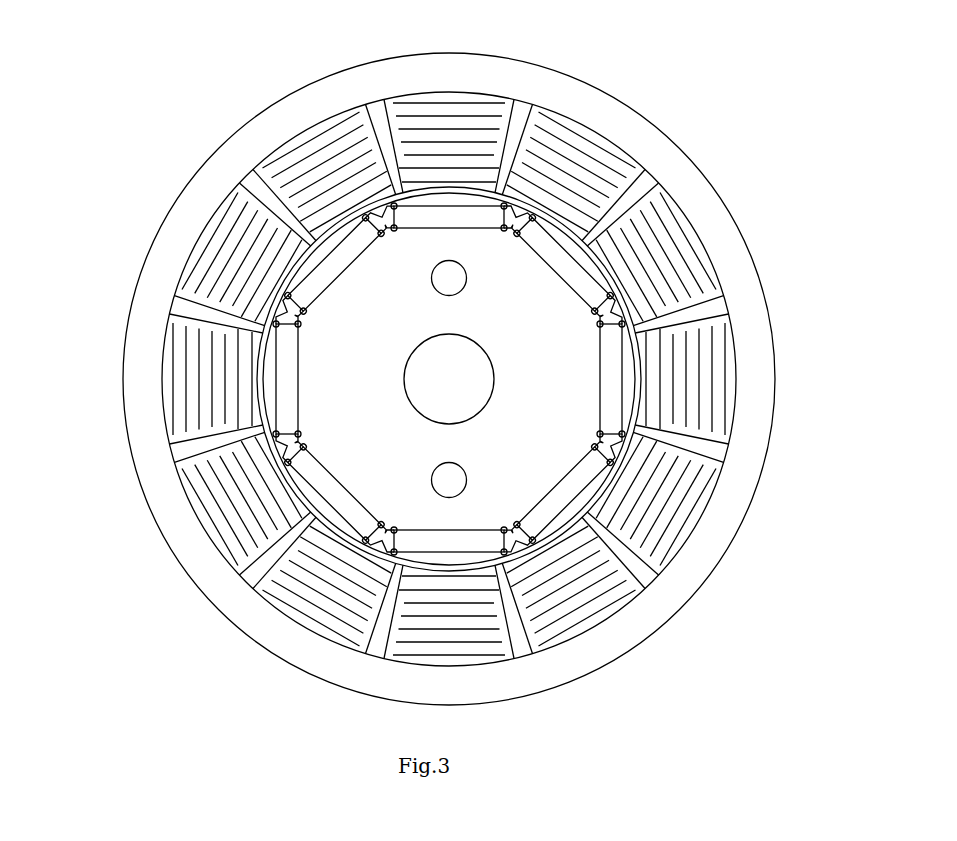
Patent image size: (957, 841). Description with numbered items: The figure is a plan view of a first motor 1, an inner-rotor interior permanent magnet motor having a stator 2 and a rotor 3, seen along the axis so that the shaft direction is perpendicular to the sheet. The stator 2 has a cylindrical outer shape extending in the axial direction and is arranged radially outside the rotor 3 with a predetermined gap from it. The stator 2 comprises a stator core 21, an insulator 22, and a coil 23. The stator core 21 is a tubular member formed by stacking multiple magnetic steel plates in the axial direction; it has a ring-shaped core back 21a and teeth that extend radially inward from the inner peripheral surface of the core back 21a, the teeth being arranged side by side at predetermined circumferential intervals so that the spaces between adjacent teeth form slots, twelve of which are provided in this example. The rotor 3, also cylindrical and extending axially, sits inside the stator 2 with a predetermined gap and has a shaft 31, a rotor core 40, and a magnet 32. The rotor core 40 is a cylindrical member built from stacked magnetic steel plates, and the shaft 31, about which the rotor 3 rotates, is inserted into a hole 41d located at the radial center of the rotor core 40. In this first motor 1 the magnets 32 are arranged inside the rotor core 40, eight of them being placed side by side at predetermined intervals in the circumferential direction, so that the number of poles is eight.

The motor 1 is at (183, 146).
The stator 2 is at (164, 219).
The stator core 21 is at (273, 101).
The core back 21a is at (240, 148).
The insulator 22 is at (243, 363).
The coil 23 is at (192, 347).
The rotor 3 is at (272, 327).
The shaft 31 is at (380, 457).
The magnet 32 is at (353, 508).
The rotor core 40 is at (355, 382).
The hole 41d is at (418, 350).